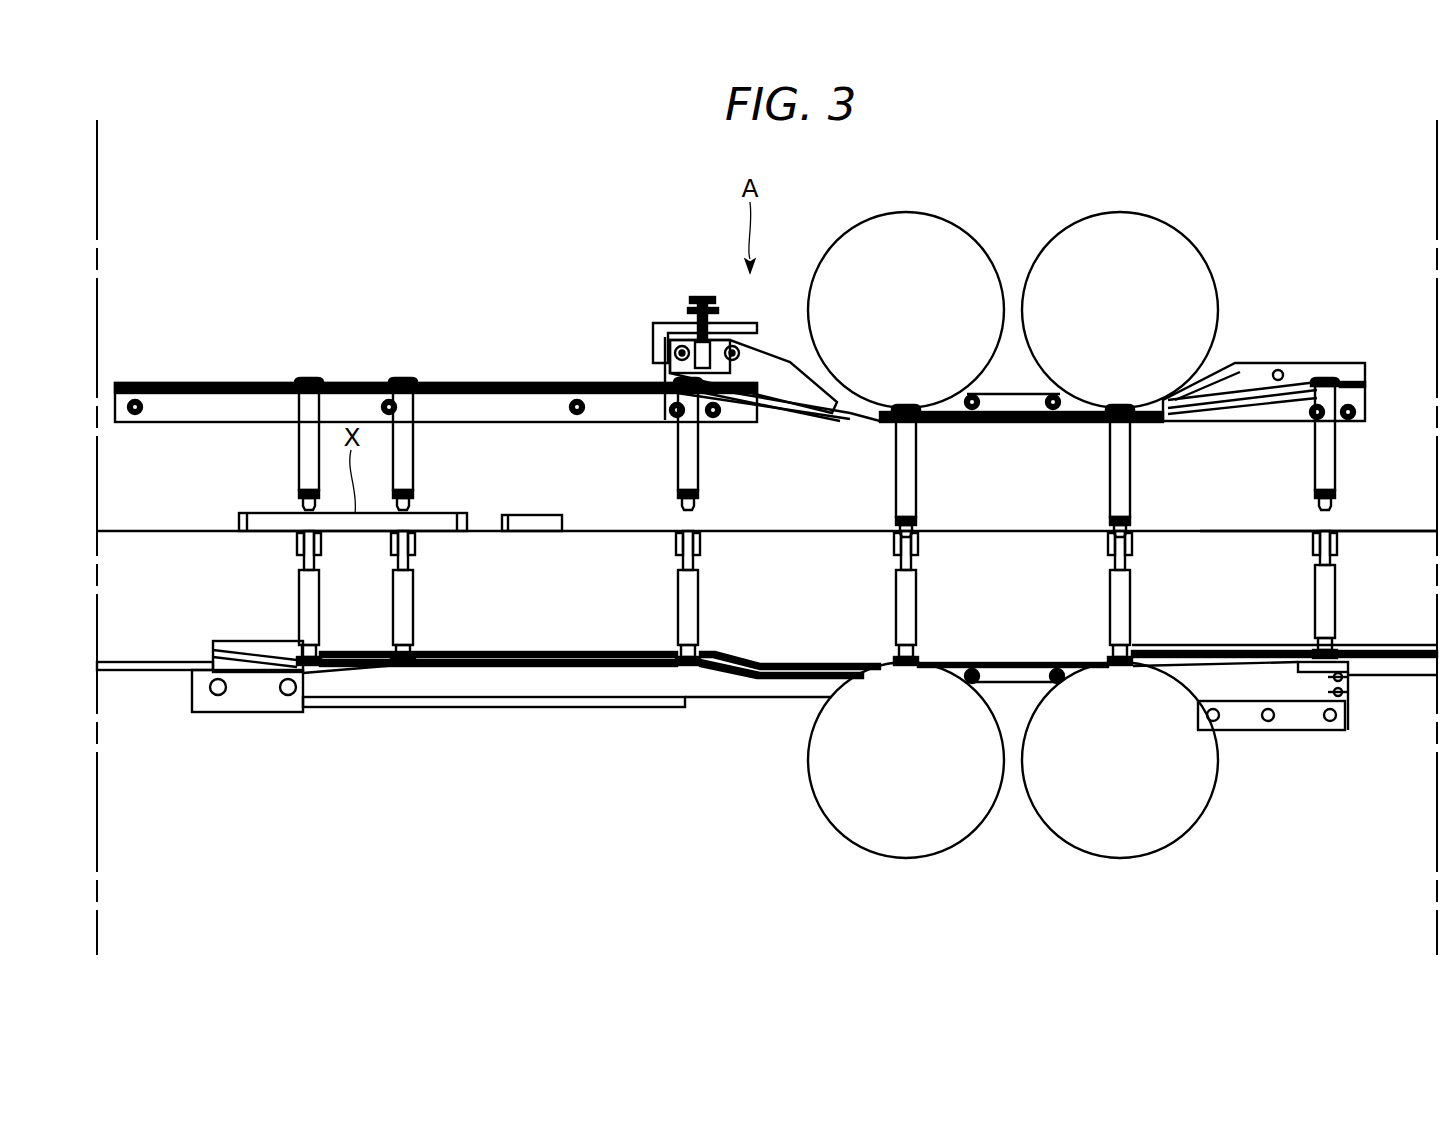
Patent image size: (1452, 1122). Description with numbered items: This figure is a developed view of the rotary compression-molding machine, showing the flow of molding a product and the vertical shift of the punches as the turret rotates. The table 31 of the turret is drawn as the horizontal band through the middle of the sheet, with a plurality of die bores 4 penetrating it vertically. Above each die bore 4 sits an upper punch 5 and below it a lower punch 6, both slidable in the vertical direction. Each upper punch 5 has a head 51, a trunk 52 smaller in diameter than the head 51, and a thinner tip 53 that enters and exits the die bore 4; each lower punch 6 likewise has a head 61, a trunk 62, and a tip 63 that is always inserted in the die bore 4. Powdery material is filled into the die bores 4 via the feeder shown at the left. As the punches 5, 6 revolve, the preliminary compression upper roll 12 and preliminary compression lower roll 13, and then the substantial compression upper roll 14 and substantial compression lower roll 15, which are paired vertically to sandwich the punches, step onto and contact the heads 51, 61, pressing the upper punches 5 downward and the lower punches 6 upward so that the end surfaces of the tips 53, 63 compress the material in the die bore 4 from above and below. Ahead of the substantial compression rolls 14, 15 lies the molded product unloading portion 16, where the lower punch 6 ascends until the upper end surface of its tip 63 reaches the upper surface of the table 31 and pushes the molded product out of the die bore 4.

The die bore 4 is at (815, 582).
The upper punch 5 is at (775, 412).
The lower punch 6 is at (819, 645).
The preliminary compression upper roll 12 is at (905, 211).
The preliminary compression lower roll 13 is at (905, 859).
The substantial compression upper roll 14 is at (1120, 211).
The substantial compression lower roll 15 is at (1118, 859).
The molded product unloading portion 16 is at (1365, 530).
The table 31 is at (878, 530).
The head 51 is at (405, 378).
The trunk 52 is at (415, 462).
The tip 53 is at (411, 502).
The head 61 is at (403, 667).
The trunk 62 is at (415, 620).
The tip 63 is at (415, 547).